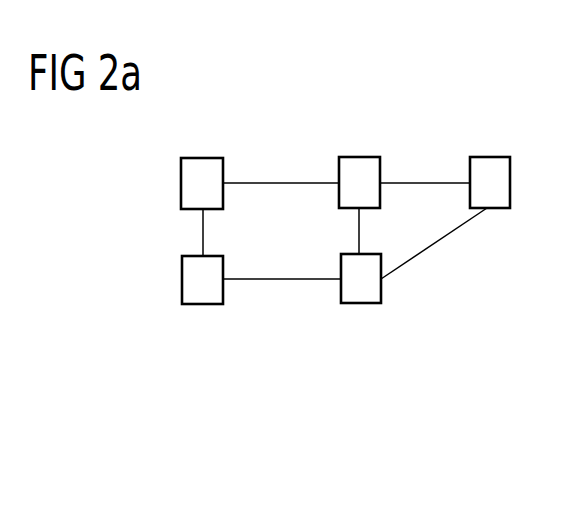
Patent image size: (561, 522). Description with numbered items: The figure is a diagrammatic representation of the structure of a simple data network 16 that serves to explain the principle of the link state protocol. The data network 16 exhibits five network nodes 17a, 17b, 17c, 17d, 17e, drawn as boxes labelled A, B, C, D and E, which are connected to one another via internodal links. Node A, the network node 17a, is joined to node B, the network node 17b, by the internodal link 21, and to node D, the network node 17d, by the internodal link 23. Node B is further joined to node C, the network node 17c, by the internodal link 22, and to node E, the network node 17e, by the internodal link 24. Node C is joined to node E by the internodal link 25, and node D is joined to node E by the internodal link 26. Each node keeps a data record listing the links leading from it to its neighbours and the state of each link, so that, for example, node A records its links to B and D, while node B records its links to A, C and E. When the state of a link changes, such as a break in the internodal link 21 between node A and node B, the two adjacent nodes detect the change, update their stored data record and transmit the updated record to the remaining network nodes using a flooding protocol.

The data network 16 is at (278, 100).
The network node 17a is at (203, 157).
The network node 17b is at (358, 156).
The network node 17c is at (487, 156).
The network node 17d is at (205, 305).
The network node 17e is at (362, 304).
The internodal link 21 is at (284, 182).
The internodal link 22 is at (423, 182).
The internodal link 23 is at (202, 233).
The internodal link 24 is at (358, 230).
The internodal link 25 is at (440, 251).
The internodal link 26 is at (282, 282).